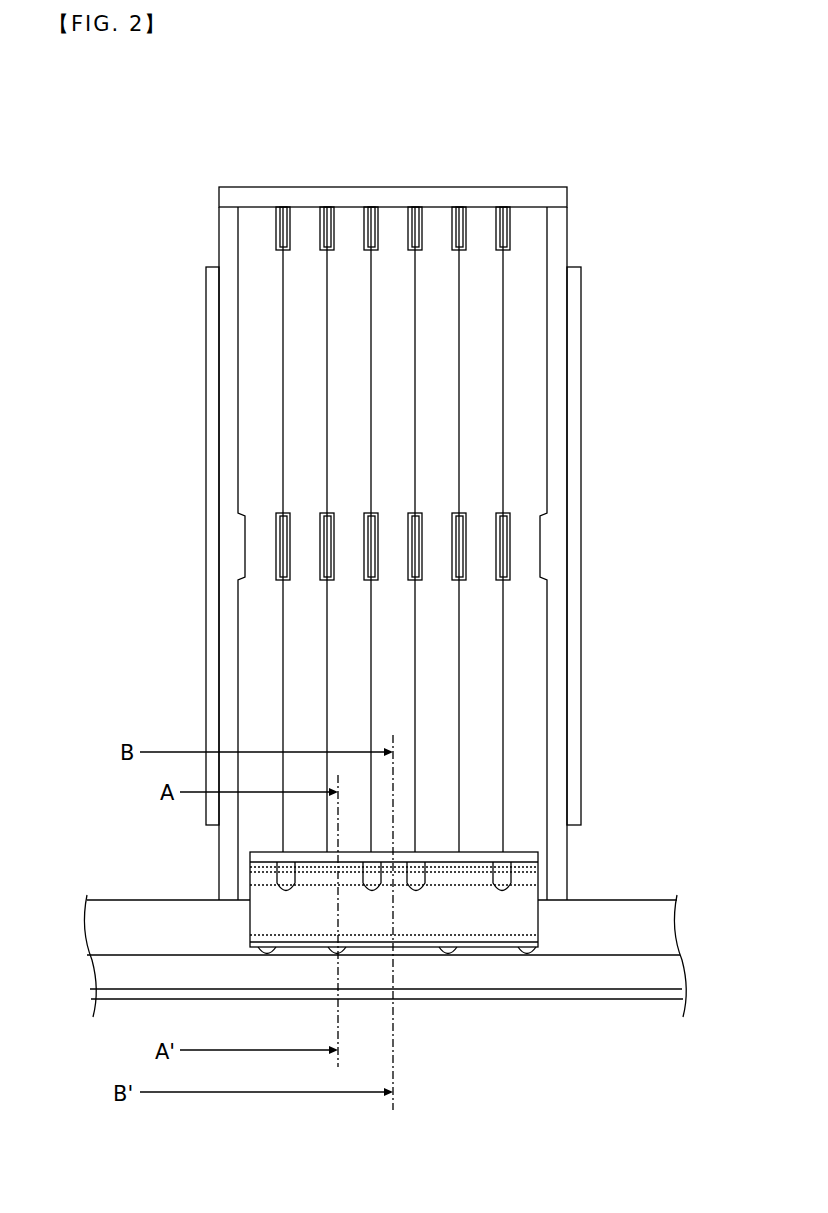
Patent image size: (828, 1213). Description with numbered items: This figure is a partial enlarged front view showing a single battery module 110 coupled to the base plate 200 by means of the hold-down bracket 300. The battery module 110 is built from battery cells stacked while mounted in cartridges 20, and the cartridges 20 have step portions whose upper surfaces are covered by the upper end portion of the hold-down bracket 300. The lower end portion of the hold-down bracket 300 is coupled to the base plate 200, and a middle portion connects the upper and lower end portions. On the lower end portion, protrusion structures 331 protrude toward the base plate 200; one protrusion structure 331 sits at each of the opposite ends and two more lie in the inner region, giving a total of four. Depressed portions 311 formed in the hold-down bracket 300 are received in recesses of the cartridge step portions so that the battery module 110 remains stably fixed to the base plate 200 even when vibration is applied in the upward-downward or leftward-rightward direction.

The battery module 110 is at (200, 172).
The cartridge 20 is at (522, 315).
The hold-down bracket 300 is at (583, 920).
The depressed portion 311 is at (277, 877).
The protrusion structure 331 is at (453, 955).
The base plate 200 is at (528, 973).